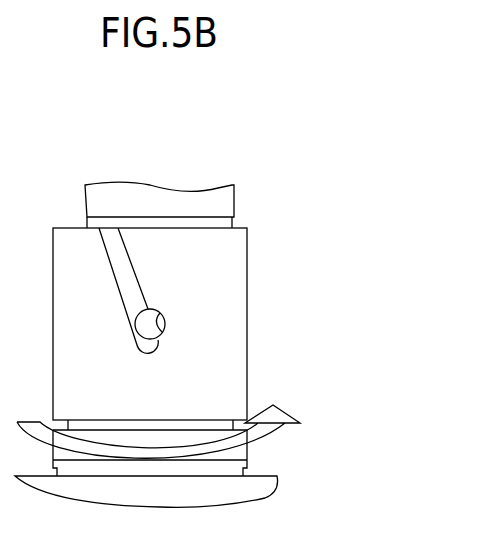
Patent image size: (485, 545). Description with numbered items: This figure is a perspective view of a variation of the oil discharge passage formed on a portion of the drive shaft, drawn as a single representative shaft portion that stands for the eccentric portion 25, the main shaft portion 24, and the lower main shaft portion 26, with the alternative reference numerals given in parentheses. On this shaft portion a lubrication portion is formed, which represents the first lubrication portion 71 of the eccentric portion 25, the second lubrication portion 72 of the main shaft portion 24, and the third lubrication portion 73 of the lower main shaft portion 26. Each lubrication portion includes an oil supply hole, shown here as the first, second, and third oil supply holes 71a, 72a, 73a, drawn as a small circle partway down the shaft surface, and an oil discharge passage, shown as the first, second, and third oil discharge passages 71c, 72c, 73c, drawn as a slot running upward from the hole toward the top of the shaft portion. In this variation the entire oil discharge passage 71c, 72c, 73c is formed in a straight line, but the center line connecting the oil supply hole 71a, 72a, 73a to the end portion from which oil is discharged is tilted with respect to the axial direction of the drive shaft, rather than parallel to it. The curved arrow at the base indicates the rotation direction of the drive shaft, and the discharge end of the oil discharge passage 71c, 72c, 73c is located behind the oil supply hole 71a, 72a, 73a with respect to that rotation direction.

The first lubrication portion 71 is at (249, 235).
The second lubrication portion 72 is at (249, 235).
The third lubrication portion 73 is at (249, 235).
The first oil supply hole 71a is at (277, 313).
The second oil supply hole 72a is at (150, 324).
The third oil supply hole 73a is at (160, 313).
The first oil discharge passage 71c is at (156, 177).
The second oil discharge passage 72c is at (159, 205).
The third oil discharge passage 73c is at (110, 238).
The eccentric portion 25 is at (228, 352).
The main shaft portion 24 is at (150, 352).
The lower main shaft portion 26 is at (247, 361).